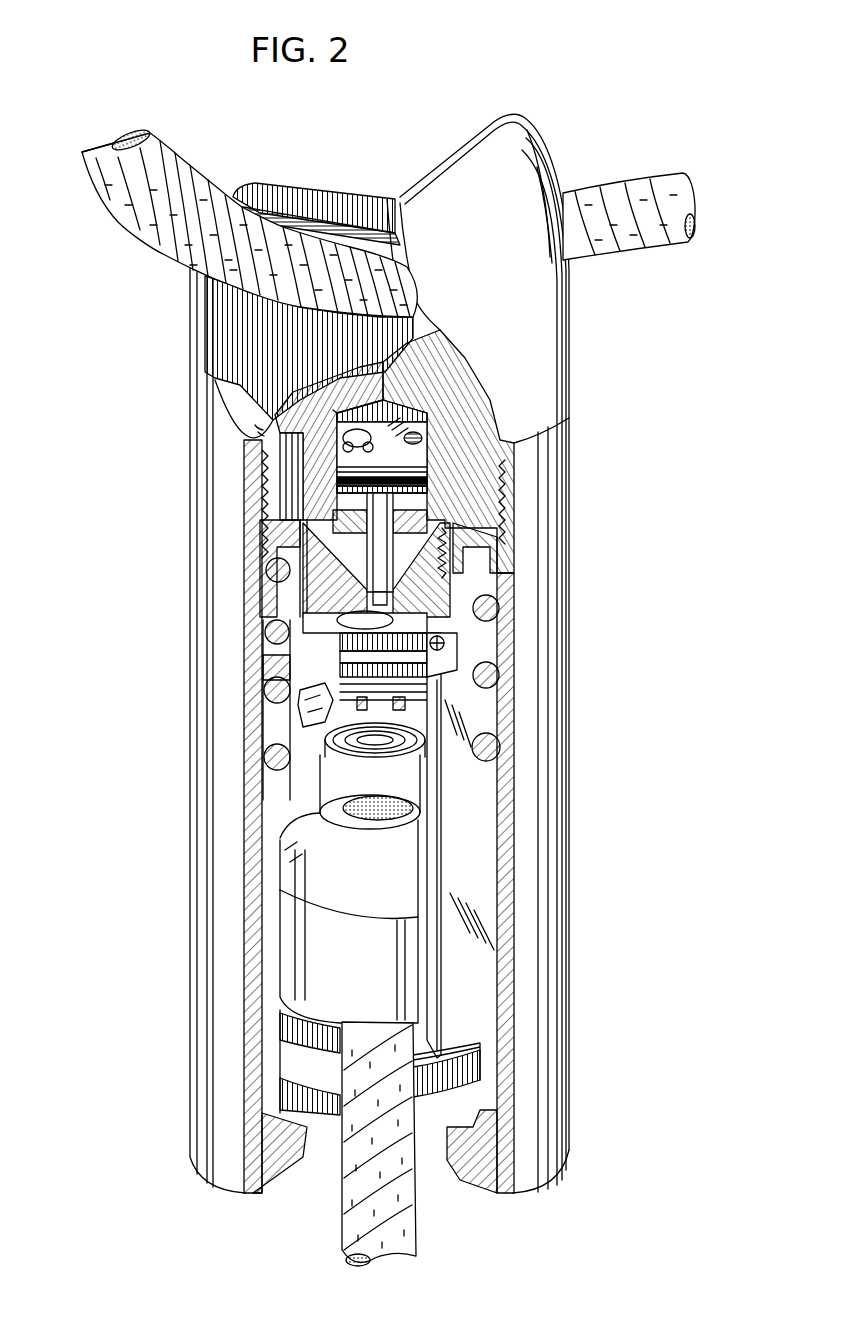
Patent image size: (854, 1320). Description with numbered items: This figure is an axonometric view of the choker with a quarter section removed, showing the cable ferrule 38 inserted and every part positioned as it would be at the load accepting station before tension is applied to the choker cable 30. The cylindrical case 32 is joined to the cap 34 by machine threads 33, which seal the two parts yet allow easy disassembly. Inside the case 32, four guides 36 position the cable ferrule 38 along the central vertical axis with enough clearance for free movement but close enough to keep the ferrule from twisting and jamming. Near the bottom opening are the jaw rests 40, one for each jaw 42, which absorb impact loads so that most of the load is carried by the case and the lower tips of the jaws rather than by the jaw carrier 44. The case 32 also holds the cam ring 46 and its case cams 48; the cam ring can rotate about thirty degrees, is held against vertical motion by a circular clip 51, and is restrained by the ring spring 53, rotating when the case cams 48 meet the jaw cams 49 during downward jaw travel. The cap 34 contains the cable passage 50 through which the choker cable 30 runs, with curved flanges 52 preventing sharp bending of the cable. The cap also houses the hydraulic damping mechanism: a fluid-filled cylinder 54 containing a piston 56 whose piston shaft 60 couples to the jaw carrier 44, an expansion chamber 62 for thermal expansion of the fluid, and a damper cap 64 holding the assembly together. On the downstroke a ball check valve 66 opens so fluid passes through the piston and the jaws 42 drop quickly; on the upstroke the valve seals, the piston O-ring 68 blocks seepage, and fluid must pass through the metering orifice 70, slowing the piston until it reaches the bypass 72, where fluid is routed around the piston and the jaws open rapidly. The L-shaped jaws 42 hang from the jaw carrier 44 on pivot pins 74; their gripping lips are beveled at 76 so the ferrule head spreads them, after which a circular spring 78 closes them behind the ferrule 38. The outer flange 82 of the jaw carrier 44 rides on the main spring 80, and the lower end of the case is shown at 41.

The choker cable 30 is at (133, 224).
The case 32 is at (230, 488).
The machine threads 33 is at (258, 517).
The cap 34 is at (222, 430).
The guides 36 is at (278, 893).
The cable ferrule 38 is at (335, 957).
The jaw rests 40 is at (290, 1127).
The lower end nut 41 is at (293, 1137).
The jaws 42 is at (300, 682).
The jaw carrier 44 is at (490, 570).
The cam ring 46 is at (373, 787).
The case cams 48 is at (310, 790).
The jaw cams 49 is at (303, 710).
The cable passage 50 is at (223, 343).
The circular clip 51 is at (268, 765).
The curved flanges 52 is at (541, 135).
The ring spring 53 is at (262, 735).
The cylinder 54 is at (393, 412).
The piston 56 is at (340, 432).
The piston shaft 60 is at (377, 533).
The expansion chamber 62 is at (297, 477).
The damper cap 64 is at (350, 578).
The ball check valve 66 is at (337, 408).
The piston O-ring 68 is at (430, 478).
The metering orifice 70 is at (428, 445).
The bypass 72 is at (440, 500).
The pivot pins 74 is at (440, 637).
The bevel 76 is at (458, 1165).
The circular spring 78 is at (497, 660).
The main spring 80 is at (487, 737).
The outer flange 82 is at (493, 543).